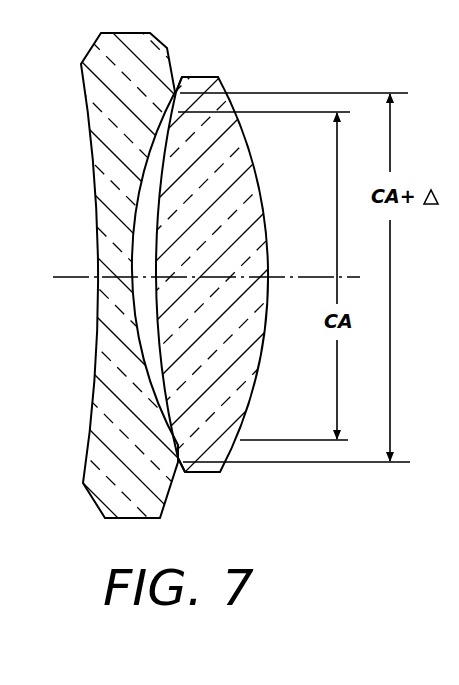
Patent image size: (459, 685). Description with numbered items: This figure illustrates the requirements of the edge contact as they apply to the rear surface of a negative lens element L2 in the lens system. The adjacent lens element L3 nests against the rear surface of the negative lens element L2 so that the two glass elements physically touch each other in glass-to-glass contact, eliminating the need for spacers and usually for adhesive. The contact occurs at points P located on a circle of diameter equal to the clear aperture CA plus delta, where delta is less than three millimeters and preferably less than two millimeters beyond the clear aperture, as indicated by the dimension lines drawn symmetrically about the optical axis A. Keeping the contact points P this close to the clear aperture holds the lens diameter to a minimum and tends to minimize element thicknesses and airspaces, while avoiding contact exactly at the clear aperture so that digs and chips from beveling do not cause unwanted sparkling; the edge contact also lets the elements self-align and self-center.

The negative lens element L2 is at (115, 420).
The lens element L3 is at (222, 364).
The edge contact points P is at (186, 97).
The optical axis A is at (82, 274).